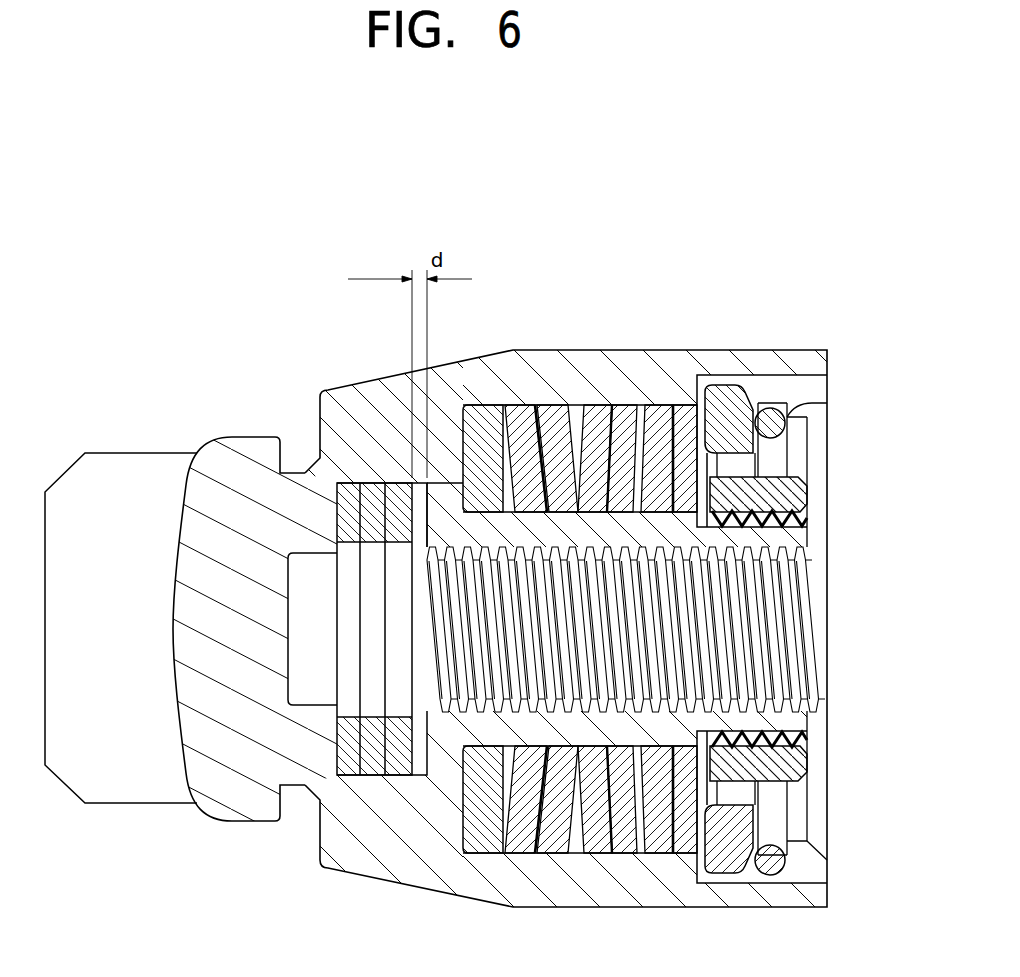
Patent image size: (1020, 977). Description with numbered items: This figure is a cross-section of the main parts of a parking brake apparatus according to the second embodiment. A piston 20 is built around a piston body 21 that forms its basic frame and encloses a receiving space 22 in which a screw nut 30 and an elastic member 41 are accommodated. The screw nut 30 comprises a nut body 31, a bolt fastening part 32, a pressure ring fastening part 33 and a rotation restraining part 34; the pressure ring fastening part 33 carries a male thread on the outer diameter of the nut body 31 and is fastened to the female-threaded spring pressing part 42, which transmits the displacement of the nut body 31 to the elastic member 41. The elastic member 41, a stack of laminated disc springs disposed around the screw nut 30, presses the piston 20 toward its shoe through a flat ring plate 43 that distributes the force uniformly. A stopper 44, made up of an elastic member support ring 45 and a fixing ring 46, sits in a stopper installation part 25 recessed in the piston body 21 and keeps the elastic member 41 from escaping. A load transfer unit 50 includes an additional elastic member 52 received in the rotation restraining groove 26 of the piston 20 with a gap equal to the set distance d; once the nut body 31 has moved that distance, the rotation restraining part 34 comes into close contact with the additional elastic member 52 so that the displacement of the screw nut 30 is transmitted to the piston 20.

The piston 20 is at (323, 394).
The piston body 21 is at (614, 880).
The receiving space 22 is at (581, 822).
The stopper installation part 25 is at (795, 408).
The rotation restraining groove 26 is at (407, 642).
The screw nut 30 is at (629, 757).
The nut body 31 is at (545, 528).
The bolt fastening part 32 is at (775, 650).
The pressure ring fastening part 33 is at (792, 762).
The rotation restraining part 34 is at (447, 500).
The elastic member 41 is at (630, 423).
The spring pressing part 42 is at (795, 476).
The ring plate 43 is at (483, 420).
The stopper 44 is at (747, 566).
The elastic member support ring 45 is at (720, 385).
The fixing ring 46 is at (770, 405).
The load transfer unit 50 is at (337, 772).
The additional elastic member 52 is at (337, 772).